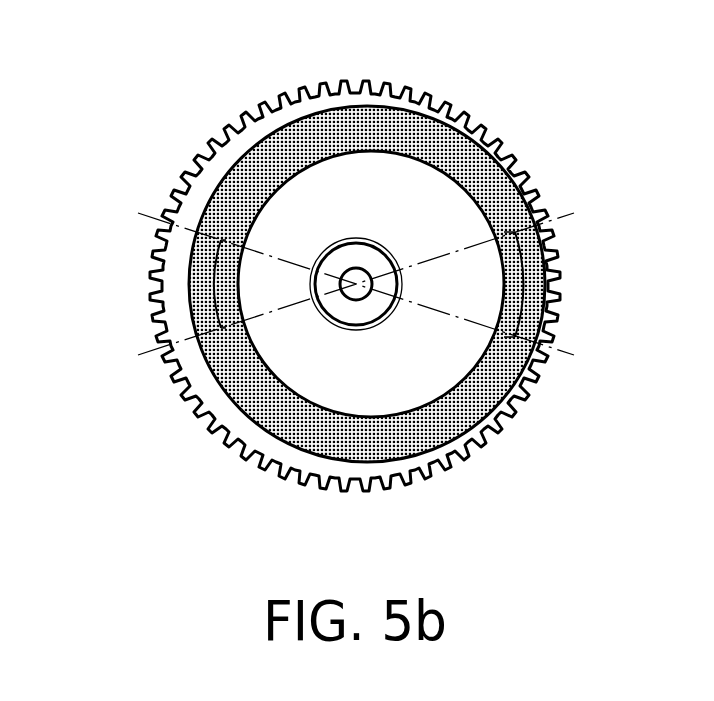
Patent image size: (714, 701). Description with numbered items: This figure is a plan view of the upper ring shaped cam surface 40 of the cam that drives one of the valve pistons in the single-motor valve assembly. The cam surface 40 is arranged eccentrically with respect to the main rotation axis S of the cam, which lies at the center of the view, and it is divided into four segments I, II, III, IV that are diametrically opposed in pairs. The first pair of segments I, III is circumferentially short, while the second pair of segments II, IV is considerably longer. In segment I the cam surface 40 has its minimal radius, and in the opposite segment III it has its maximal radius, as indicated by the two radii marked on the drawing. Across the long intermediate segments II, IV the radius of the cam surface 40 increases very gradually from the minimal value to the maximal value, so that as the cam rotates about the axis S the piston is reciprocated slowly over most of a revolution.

The upper ring shaped cam surface 40 is at (277, 130).
The main rotation axis S is at (357, 286).
The segment I is at (106, 285).
The segment II is at (355, 34).
The segment III is at (611, 285).
The segment IV is at (353, 542).